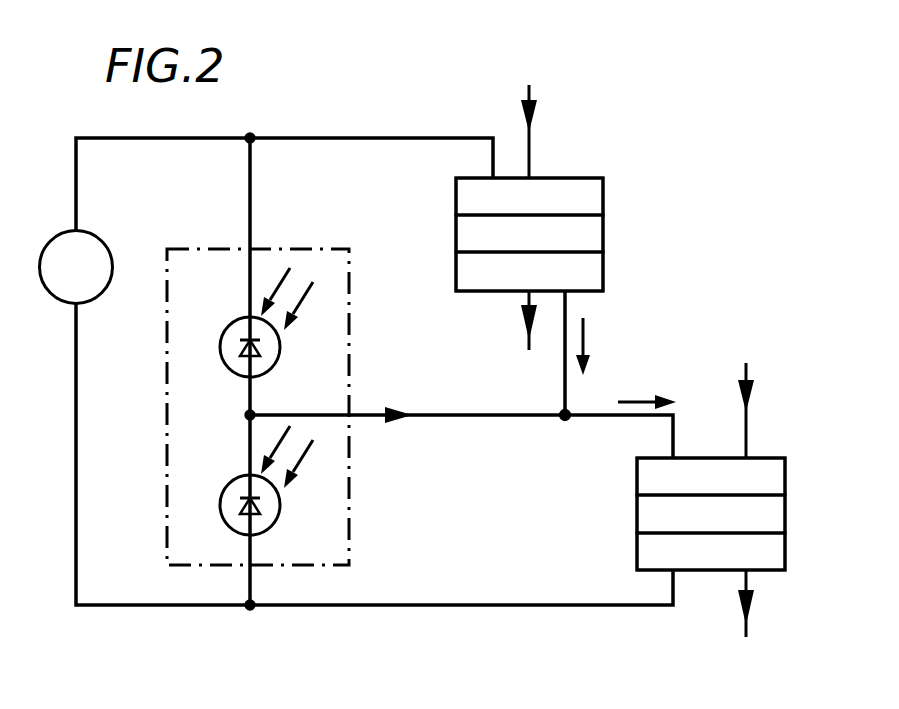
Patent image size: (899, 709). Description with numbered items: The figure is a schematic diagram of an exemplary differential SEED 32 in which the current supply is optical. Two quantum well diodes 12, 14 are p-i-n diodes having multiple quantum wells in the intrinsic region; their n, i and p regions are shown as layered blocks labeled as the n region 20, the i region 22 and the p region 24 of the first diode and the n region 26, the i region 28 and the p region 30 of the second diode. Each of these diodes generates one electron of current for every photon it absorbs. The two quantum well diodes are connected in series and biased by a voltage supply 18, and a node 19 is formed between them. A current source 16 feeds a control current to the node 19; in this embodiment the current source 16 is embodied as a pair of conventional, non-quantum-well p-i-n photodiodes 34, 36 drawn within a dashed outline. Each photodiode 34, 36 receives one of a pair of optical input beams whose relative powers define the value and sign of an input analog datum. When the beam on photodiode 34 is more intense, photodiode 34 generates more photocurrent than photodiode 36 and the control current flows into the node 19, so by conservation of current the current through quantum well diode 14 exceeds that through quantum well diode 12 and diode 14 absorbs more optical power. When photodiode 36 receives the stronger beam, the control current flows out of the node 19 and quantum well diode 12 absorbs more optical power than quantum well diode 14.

The quantum well diode 12 is at (608, 132).
The quantum well diode 14 is at (798, 422).
The current source 16 is at (349, 500).
The voltage supply 18 is at (58, 292).
The node 19 is at (560, 422).
The n region 20 is at (600, 198).
The i region 22 is at (462, 236).
The p region 24 is at (598, 270).
The n region 26 is at (780, 478).
The i region 28 is at (644, 516).
The p region 30 is at (775, 552).
The differential SEED 32 is at (200, 116).
The photodiode 34 is at (238, 331).
The photodiode 36 is at (238, 489).